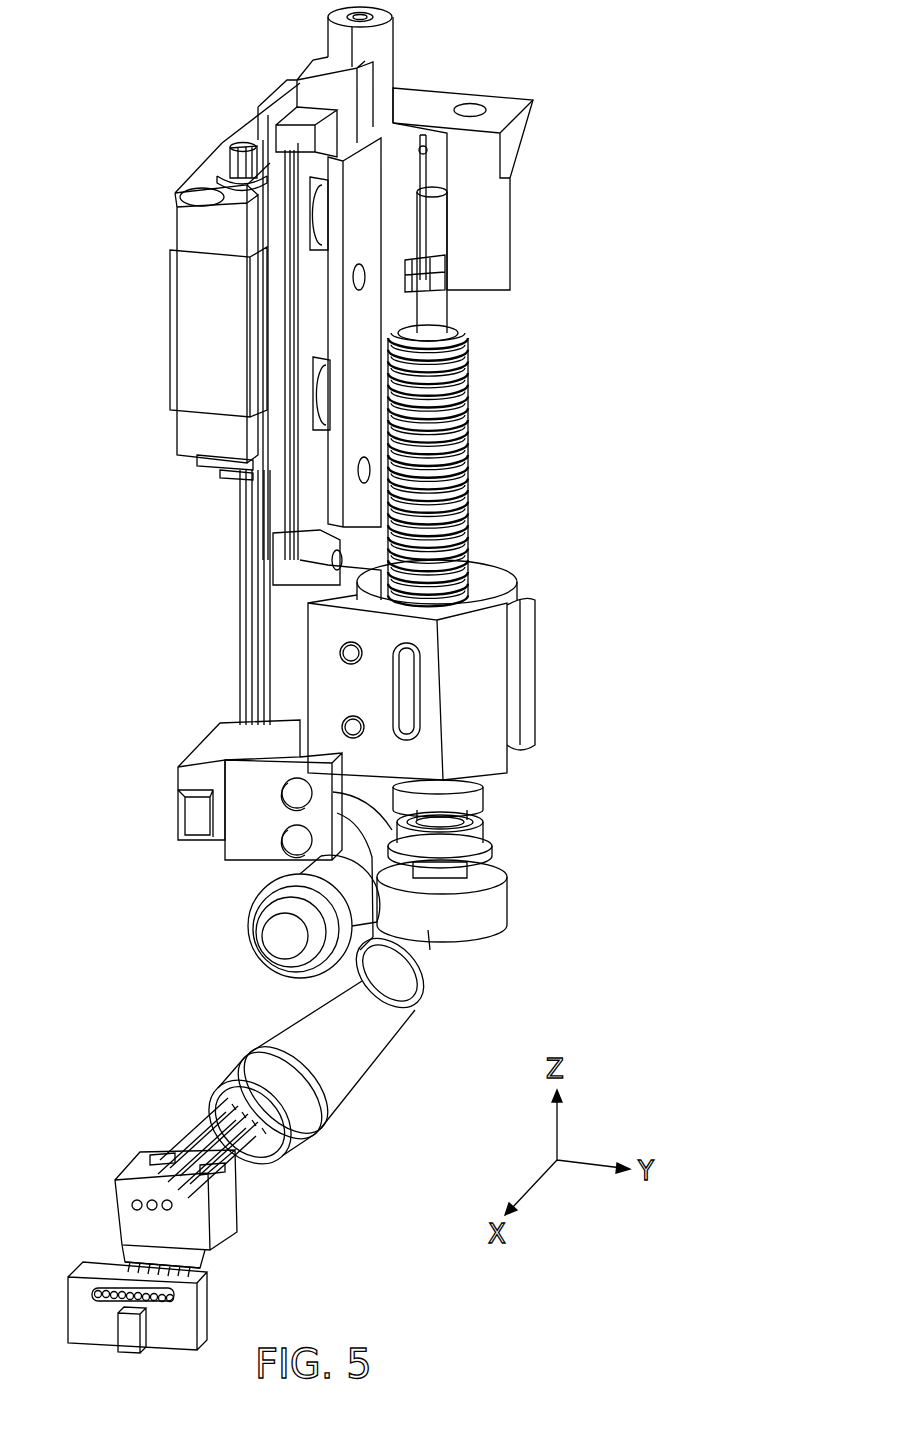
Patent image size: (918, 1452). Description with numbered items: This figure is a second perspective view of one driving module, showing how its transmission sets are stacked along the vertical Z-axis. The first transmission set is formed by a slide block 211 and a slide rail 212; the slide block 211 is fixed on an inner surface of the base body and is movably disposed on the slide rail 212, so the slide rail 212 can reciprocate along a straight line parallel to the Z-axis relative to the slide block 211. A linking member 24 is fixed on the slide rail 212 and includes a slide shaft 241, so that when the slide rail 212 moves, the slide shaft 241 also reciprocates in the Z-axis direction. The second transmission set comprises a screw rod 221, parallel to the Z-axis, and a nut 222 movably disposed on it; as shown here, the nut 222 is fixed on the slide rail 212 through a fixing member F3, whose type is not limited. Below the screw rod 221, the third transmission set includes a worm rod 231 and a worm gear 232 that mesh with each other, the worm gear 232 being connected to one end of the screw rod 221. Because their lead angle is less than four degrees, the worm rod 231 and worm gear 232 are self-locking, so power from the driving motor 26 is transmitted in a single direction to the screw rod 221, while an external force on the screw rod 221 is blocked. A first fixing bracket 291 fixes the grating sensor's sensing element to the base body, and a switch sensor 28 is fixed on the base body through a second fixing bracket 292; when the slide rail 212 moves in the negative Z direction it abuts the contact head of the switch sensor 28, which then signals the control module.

The slide shaft 241 is at (380, 50).
The first fixing bracket 291 is at (495, 138).
The linking member 24 is at (310, 298).
The slide block 211 is at (210, 360).
The screw rod 221 is at (470, 458).
The nut 222 is at (488, 578).
The slide rail 212 is at (250, 582).
The fixing member F3 is at (525, 675).
The switch sensor 28 is at (190, 778).
The second fixing bracket 292 is at (243, 865).
The worm gear 232 is at (497, 905).
The worm rod 231 is at (368, 885).
The driving motor 26 is at (347, 1068).